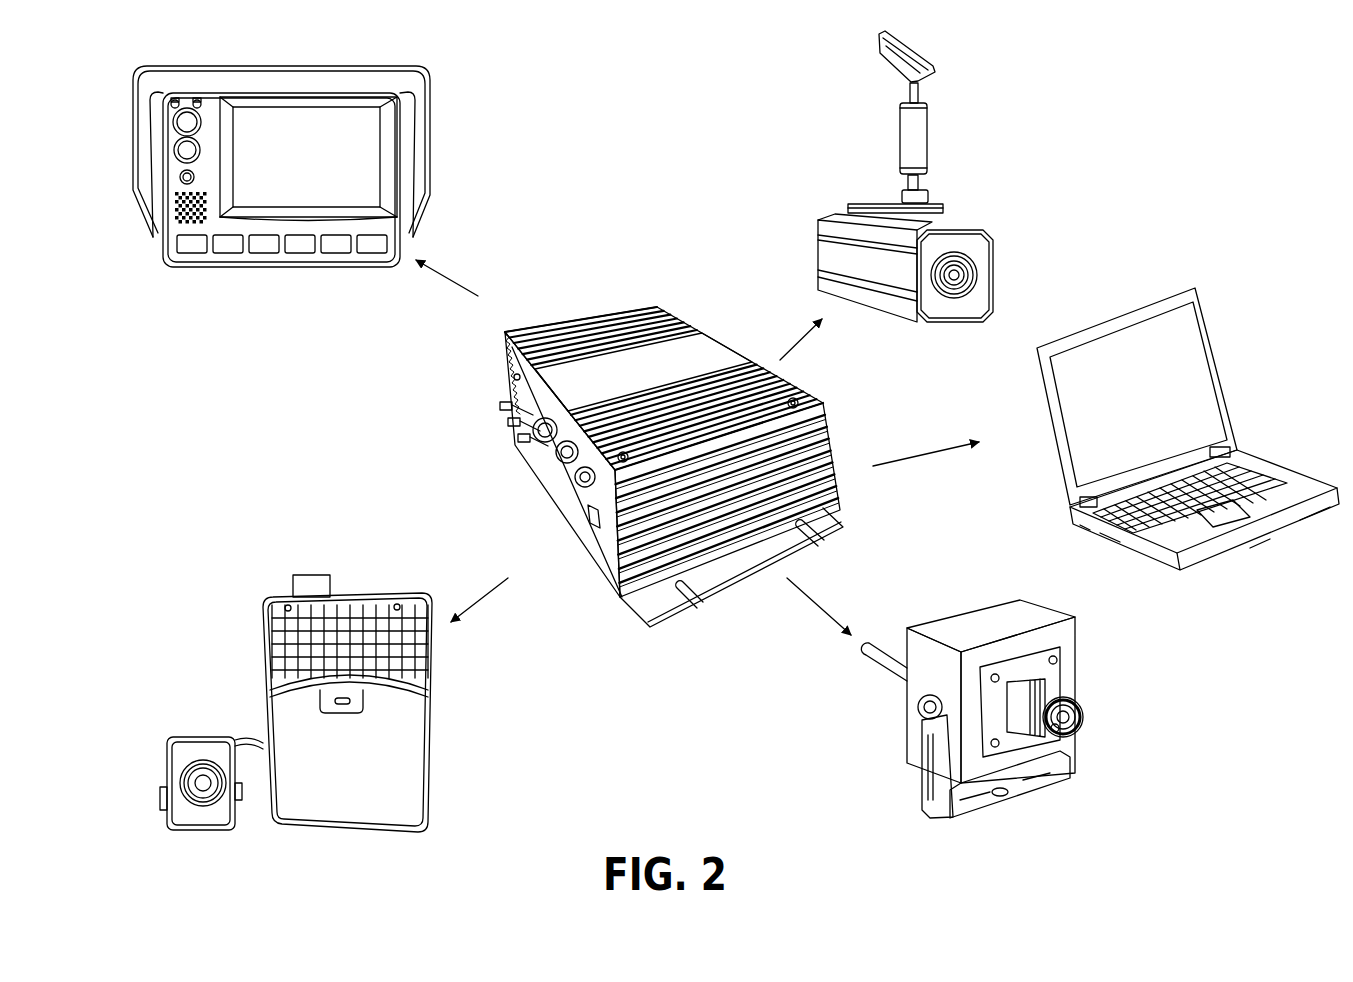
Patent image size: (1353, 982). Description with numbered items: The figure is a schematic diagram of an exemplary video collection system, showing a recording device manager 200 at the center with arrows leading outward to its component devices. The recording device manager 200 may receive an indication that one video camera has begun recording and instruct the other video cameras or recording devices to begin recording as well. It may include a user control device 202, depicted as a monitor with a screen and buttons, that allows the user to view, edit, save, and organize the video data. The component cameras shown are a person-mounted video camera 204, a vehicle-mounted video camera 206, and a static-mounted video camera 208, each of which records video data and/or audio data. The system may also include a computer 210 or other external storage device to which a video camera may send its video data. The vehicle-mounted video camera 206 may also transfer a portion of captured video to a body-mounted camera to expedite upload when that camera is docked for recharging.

The recording device manager 200 is at (647, 293).
The user control device 202 is at (440, 150).
The person-mounted video camera 204 is at (382, 577).
The vehicle-mounted video camera 206 is at (852, 200).
The static-mounted video camera 208 is at (975, 602).
The computer 210 is at (1078, 332).